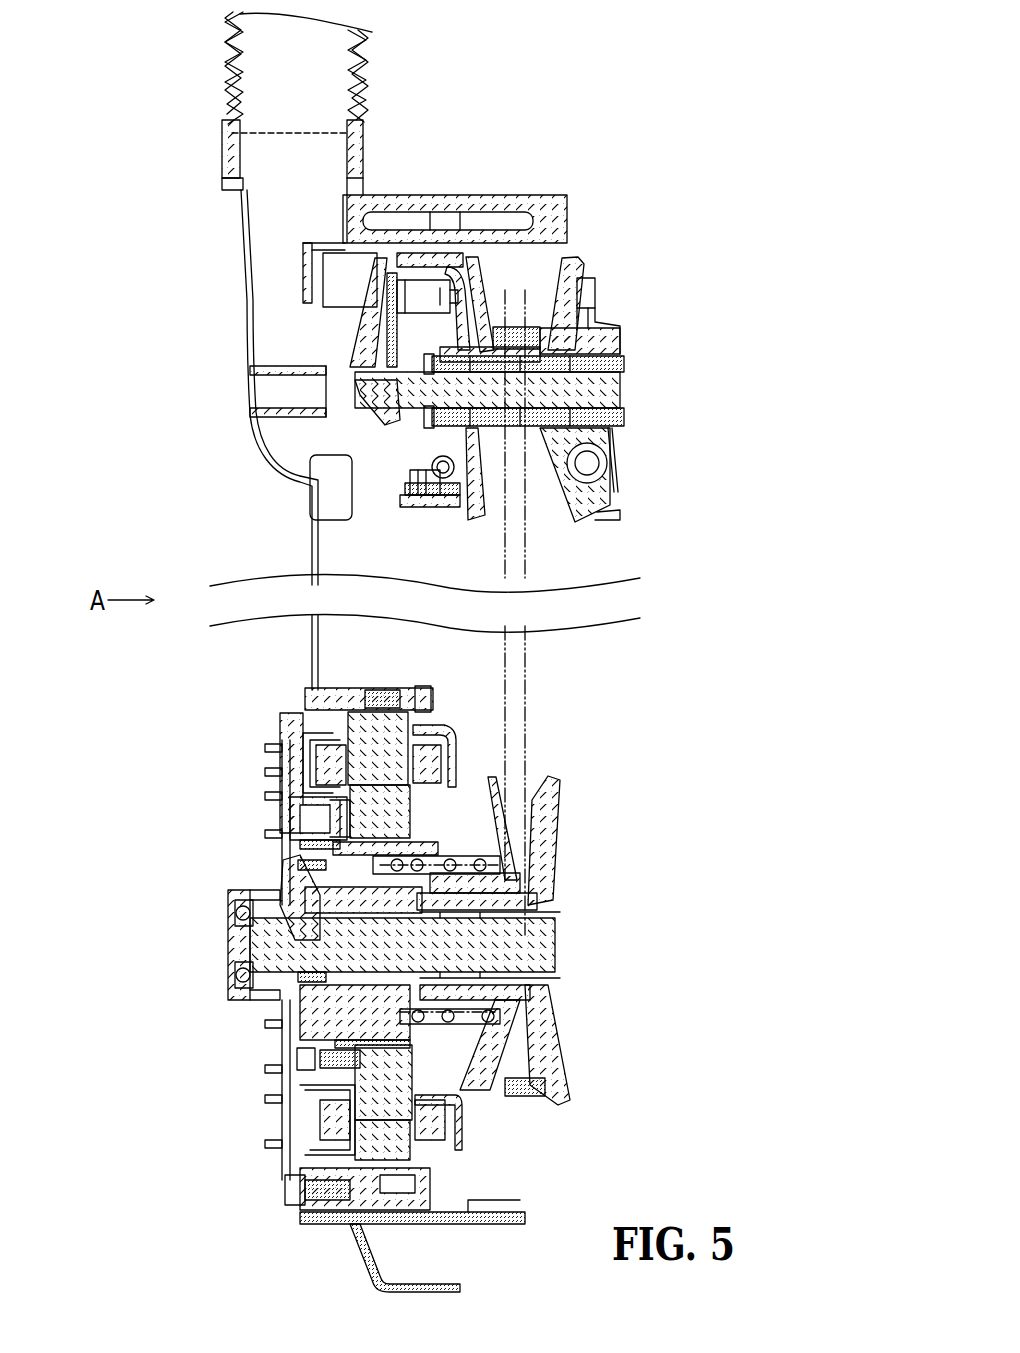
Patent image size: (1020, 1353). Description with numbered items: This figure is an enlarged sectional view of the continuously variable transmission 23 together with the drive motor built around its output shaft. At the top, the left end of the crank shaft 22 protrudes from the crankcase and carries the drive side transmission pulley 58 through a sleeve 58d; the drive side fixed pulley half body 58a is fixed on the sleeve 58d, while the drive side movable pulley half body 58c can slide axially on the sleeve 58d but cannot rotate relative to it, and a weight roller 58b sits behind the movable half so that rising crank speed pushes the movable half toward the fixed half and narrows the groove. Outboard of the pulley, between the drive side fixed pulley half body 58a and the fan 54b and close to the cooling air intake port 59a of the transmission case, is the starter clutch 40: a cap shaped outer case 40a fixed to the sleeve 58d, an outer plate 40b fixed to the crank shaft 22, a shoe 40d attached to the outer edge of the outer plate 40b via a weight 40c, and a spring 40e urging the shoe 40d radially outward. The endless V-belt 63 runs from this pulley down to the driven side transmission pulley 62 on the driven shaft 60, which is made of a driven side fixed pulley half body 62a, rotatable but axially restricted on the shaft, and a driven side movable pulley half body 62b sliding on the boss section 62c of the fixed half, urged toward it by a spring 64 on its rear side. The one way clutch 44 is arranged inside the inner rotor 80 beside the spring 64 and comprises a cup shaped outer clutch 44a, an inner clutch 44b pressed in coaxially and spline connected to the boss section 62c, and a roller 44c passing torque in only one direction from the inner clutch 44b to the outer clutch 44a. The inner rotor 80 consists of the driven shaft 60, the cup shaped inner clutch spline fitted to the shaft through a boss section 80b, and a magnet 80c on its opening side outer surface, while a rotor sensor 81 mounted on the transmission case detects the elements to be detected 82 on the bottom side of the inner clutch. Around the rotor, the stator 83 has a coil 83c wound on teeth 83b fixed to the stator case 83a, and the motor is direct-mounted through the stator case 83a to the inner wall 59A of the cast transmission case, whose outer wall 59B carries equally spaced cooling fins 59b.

The crank shaft 22 is at (610, 400).
The continuously variable transmission 23 is at (540, 572).
The starter clutch 40 is at (420, 240).
The outer case 40a is at (470, 525).
The outer plate 40b is at (372, 448).
The weight 40c is at (408, 530).
The shoe 40d is at (430, 535).
The spring 40e is at (478, 500).
The one way clutch 44 is at (148, 933).
The outer clutch 44a is at (290, 854).
The inner clutch 44b is at (275, 907).
The roller 44c is at (300, 872).
The fan 54b is at (372, 318).
The drive side transmission pulley 58 is at (580, 245).
The drive side fixed pulley half body 58a is at (470, 270).
The weight roller 58b is at (590, 474).
The drive side movable pulley half body 58c is at (583, 270).
The sleeve 58d is at (612, 376).
The cooling air intake port 59a is at (291, 140).
The inner wall 59A is at (285, 740).
The cooling fins 59b is at (270, 750).
The outer wall 59B is at (290, 1092).
The driven shaft 60 is at (540, 940).
The driven side transmission pulley 62 is at (570, 755).
The driven side fixed pulley half body 62a is at (560, 787).
The driven side movable pulley half body 62b is at (495, 785).
The boss section 62c is at (520, 900).
The endless V-belt 63 is at (528, 660).
The spring 64 is at (452, 855).
The inner rotor 80 is at (262, 1002).
The boss section 80b is at (300, 1022).
The magnet 80c is at (408, 1075).
The rotor sensor 81 is at (290, 807).
The sensor magnet 82 is at (290, 840).
The stator 83 is at (330, 1224).
The stator case 83a is at (420, 1224).
The teeth 83b is at (360, 1257).
The coil holder 83c is at (445, 1137).